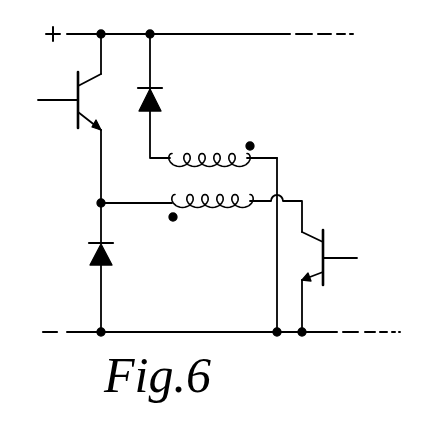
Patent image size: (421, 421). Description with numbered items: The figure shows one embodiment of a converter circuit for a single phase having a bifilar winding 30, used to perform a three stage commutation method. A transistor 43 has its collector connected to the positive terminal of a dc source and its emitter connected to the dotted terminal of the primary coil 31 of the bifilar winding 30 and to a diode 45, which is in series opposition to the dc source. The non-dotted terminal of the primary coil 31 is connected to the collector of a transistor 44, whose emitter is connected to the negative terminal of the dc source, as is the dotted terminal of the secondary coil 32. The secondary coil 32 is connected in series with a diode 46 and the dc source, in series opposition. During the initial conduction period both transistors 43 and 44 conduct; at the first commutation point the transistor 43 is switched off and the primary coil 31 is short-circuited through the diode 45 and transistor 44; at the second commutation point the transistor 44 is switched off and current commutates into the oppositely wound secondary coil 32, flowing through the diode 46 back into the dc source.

The bifilar winding 30 is at (172, 191).
The primary coil 31 is at (226, 206).
The secondary coil 32 is at (223, 152).
The transistor 43 is at (72, 108).
The transistor 44 is at (328, 252).
The diode 45 is at (90, 253).
The diode 46 is at (164, 94).